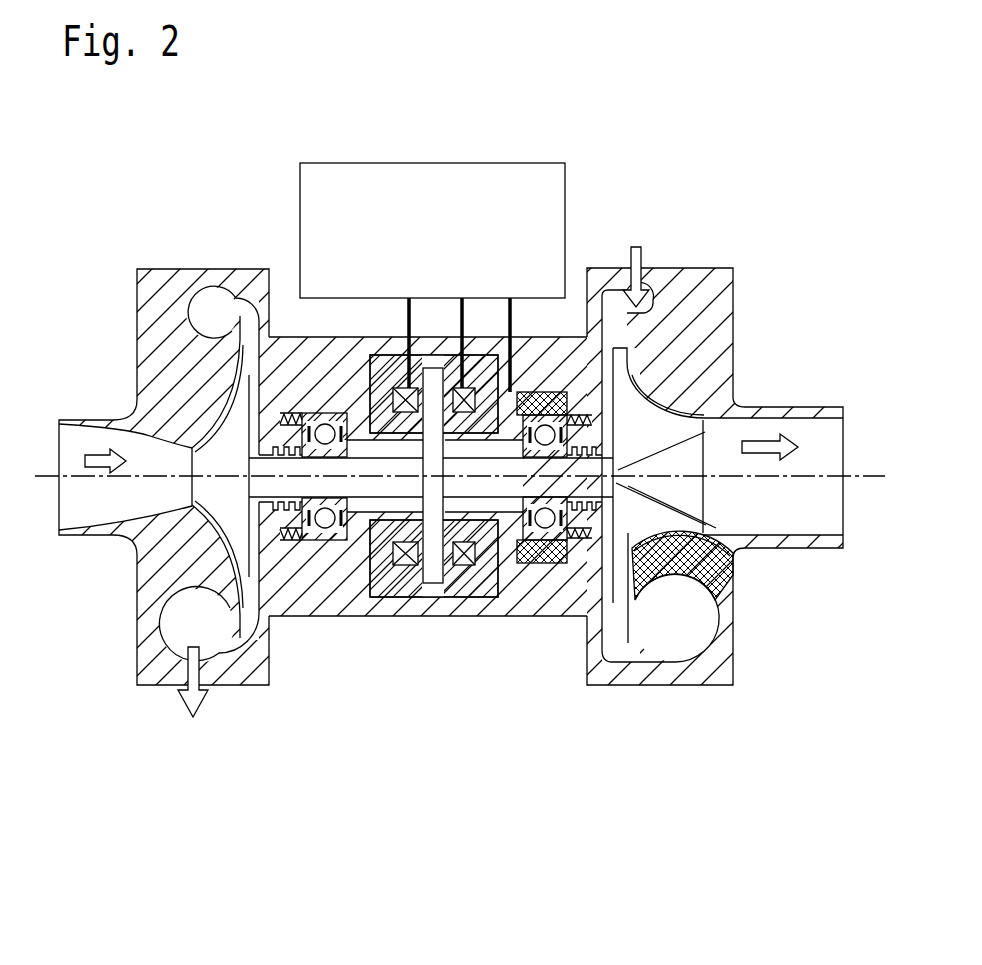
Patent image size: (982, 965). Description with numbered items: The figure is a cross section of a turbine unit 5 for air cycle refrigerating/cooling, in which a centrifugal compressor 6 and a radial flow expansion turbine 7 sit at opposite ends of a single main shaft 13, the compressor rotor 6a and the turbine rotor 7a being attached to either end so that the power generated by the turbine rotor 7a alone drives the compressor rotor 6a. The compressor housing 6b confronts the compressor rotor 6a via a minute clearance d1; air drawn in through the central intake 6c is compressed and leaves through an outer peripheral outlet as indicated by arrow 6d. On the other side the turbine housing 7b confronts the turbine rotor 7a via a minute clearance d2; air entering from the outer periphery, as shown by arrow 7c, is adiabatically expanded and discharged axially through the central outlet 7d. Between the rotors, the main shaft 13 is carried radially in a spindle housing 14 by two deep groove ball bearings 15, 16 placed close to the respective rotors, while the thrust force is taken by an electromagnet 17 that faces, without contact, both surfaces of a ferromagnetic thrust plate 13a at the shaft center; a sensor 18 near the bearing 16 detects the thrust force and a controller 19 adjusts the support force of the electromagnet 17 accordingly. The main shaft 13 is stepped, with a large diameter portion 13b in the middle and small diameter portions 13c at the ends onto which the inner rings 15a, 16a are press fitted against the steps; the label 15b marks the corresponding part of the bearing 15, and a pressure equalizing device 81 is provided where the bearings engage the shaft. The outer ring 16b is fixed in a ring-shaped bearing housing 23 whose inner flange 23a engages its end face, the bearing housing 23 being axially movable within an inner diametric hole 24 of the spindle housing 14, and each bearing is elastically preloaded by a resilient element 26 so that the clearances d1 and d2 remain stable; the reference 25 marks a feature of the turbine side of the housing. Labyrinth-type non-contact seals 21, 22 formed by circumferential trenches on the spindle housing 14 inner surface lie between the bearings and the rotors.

The turbine unit 5 is at (253, 222).
The centrifugal compressor 6 is at (192, 267).
The compressor rotor 6a is at (215, 560).
The housing 6b is at (207, 385).
The intake 6c is at (75, 503).
The arrow 6d is at (183, 690).
The radial flow expansion turbine 7 is at (723, 262).
The turbine rotor 7a is at (728, 565).
The housing 7b is at (700, 340).
The arrow 7c is at (643, 260).
The outlet 7d is at (798, 510).
The main shaft 13 is at (352, 600).
The thrust plate 13a is at (435, 575).
The large diameter portion 13b is at (365, 560).
The small diameter portions 13c is at (265, 605).
The spindle housing 14 is at (265, 440).
The bearing 15 is at (331, 404).
The inner ring 15a is at (303, 545).
The first bearing race 15b is at (345, 545).
The bearing 16 is at (548, 400).
The inner ring 16a is at (525, 545).
The outer ring 16b is at (557, 545).
The electromagnet 17 is at (395, 572).
The sensor 18 is at (522, 560).
The controller 19 is at (417, 183).
The non-contact seal 21 is at (190, 520).
The non-contact seal 22 is at (760, 537).
The bearing housing 23 is at (505, 458).
The inner flange 23a is at (458, 475).
The inner diametric hole 24 is at (615, 337).
The flow passage 25 is at (645, 370).
The resilient element 26 is at (315, 357).
The pressure equalizing device 81 is at (187, 518).
The minute clearance d1 is at (210, 420).
The minute clearance d2 is at (700, 395).